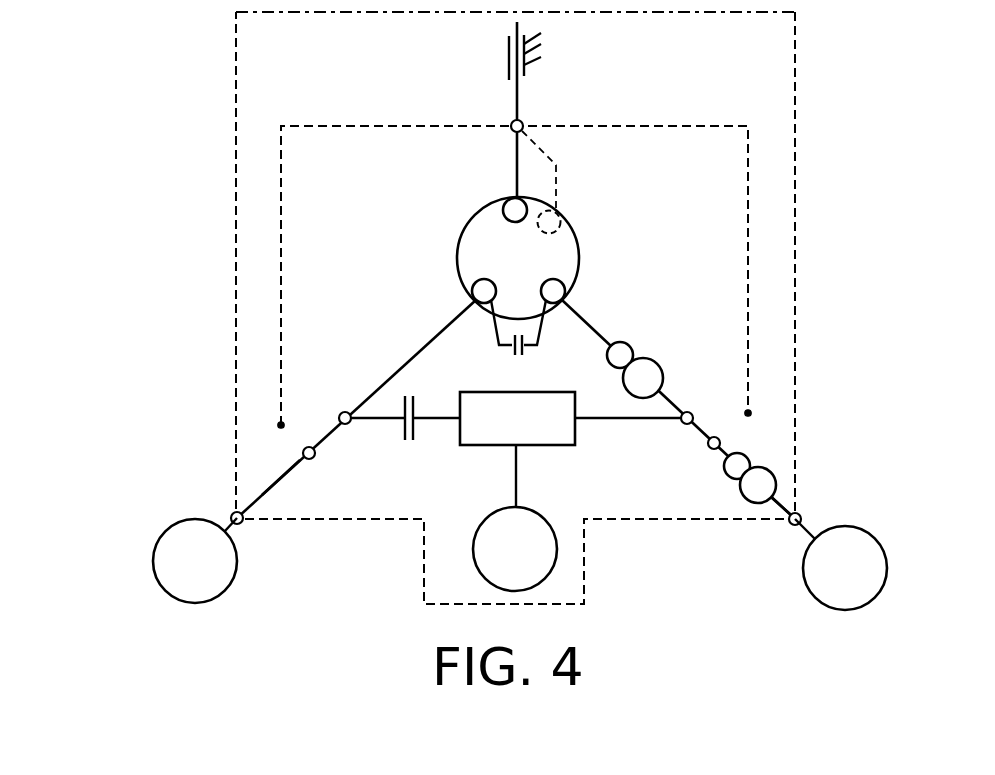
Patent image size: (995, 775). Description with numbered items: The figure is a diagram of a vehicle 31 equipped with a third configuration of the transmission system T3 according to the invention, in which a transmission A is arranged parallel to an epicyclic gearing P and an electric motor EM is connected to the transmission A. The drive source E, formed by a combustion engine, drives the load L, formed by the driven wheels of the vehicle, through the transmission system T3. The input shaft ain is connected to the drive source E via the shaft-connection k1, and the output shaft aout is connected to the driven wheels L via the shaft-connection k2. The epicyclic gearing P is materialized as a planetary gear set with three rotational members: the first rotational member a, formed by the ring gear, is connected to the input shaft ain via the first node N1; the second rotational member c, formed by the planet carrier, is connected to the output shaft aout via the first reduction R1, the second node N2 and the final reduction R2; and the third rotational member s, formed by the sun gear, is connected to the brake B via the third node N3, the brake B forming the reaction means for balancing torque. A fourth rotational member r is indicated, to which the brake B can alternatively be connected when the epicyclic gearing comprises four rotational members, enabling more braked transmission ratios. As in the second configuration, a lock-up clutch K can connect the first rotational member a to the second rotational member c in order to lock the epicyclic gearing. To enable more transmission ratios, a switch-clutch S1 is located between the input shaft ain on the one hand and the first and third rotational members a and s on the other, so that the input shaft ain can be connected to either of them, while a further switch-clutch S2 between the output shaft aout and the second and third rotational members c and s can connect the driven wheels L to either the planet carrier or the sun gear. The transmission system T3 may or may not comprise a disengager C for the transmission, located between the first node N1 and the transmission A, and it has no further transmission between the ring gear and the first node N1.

The vehicle 31 is at (128, 151).
The transmission system T3 is at (229, 192).
The brake B is at (543, 50).
The third node N3 is at (512, 122).
The epicyclic gearing P is at (518, 258).
The third rotational member s is at (504, 200).
The fourth rotational member r is at (562, 213).
The first rotational member a is at (472, 292).
The second rotational member c is at (565, 292).
The lock-up clutch K is at (518, 342).
The first reduction R1 is at (634, 357).
The final reduction R2 is at (738, 475).
The transmission A is at (570, 418).
The disengager C is at (405, 434).
The first node N1 is at (349, 424).
The second node N2 is at (681, 424).
The switch-clutch S1 is at (286, 437).
The further switch-clutch S2 is at (745, 426).
The shaft-connection k1 is at (232, 514).
The shaft-connection k2 is at (800, 513).
The input shaft ain is at (277, 485).
The output shaft aout is at (778, 507).
The drive source E is at (195, 560).
The electric motor EM is at (515, 518).
The load L is at (841, 564).